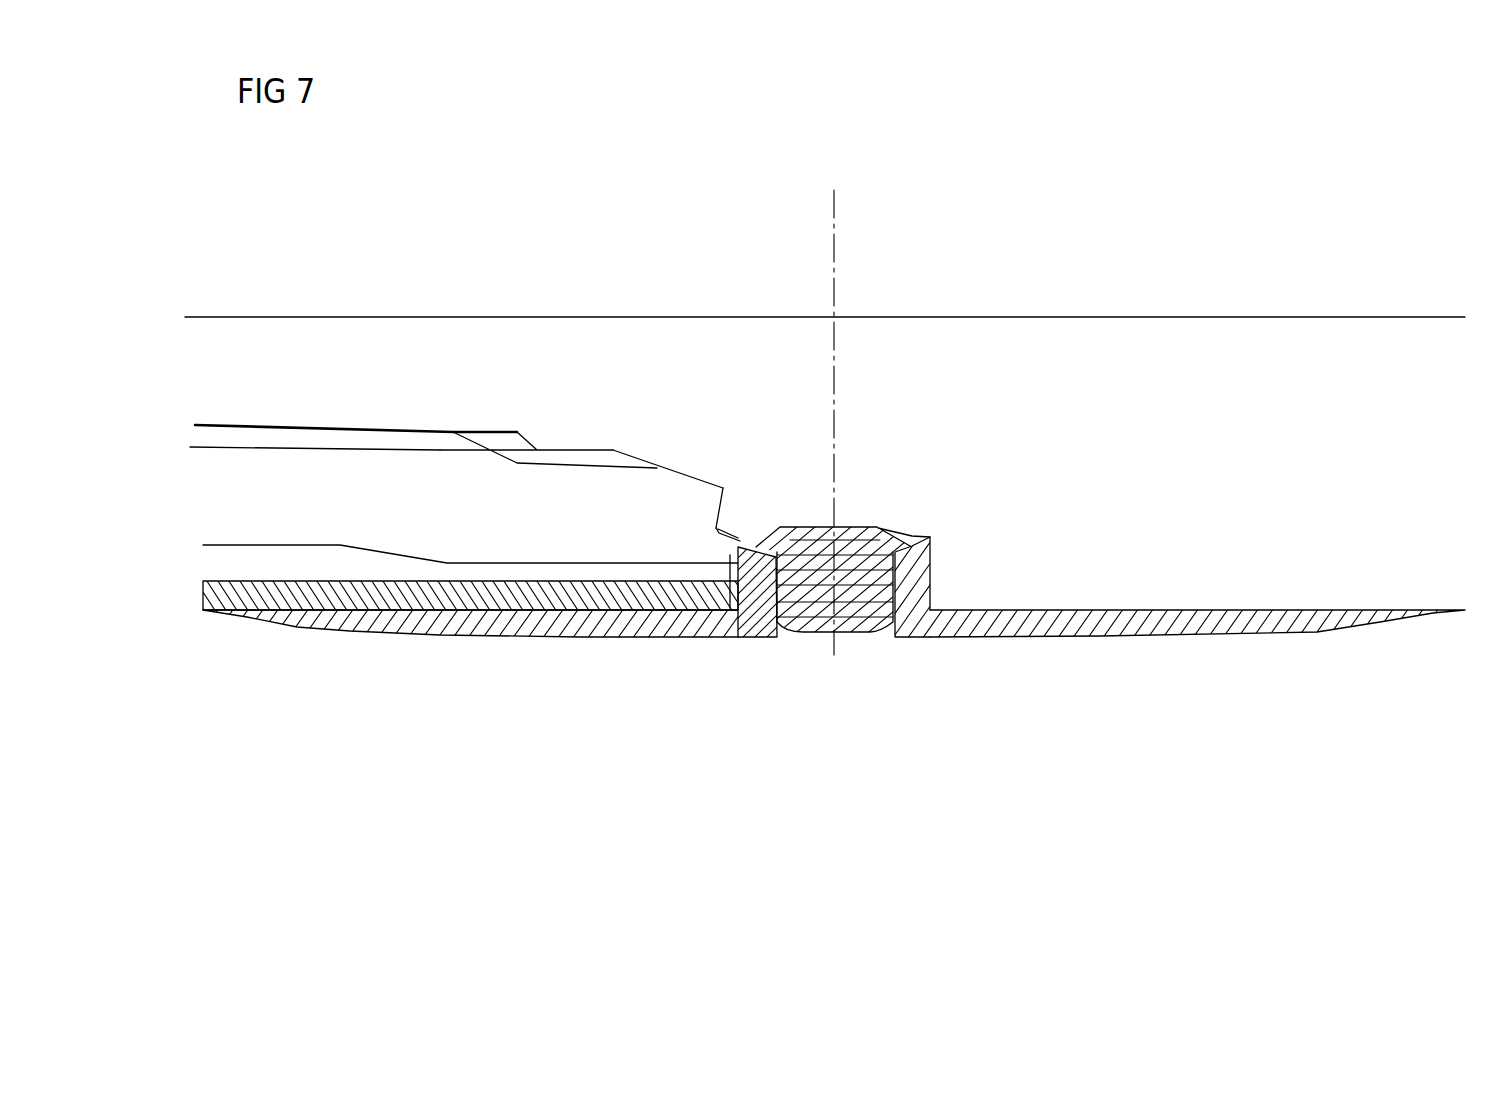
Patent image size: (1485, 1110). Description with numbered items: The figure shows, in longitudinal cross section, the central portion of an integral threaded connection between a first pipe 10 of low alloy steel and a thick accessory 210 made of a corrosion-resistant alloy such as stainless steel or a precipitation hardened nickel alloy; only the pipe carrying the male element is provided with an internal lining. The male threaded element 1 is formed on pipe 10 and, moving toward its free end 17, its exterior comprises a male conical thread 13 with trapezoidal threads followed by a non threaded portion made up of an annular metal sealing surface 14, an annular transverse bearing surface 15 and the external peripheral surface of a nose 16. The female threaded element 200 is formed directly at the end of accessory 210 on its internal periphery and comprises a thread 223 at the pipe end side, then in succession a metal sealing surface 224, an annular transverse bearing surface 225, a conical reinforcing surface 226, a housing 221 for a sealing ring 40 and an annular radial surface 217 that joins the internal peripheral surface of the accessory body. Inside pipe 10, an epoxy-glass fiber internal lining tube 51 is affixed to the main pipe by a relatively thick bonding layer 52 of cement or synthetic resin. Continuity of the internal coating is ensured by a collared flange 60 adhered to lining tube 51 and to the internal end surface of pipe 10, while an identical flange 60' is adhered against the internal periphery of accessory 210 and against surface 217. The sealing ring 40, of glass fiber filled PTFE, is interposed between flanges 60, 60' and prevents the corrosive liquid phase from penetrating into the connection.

The male threaded element 1 is at (475, 478).
The metal pipe 10 is at (402, 490).
The male conical thread 13 is at (325, 438).
The annular metal sealing surface 14 is at (683, 478).
The annular transverse bearing surface 15 is at (718, 510).
The nose 16 is at (727, 535).
The free end 17 is at (750, 538).
The sealing ring 40 is at (808, 622).
The internal lining tube 51 is at (697, 600).
The bonding layer 52 is at (410, 568).
The collared flange 60 is at (471, 655).
The flange 60' is at (1202, 652).
The female threaded element 200 is at (392, 398).
The thick accessory 210 is at (1050, 450).
The annular radial surface 217 is at (931, 573).
The housing 221 is at (853, 527).
The thread 223 is at (243, 437).
The metal sealing surface 224 is at (703, 483).
The annular transverse bearing surface 225 is at (707, 520).
The conical reinforcing surface 226 is at (718, 533).